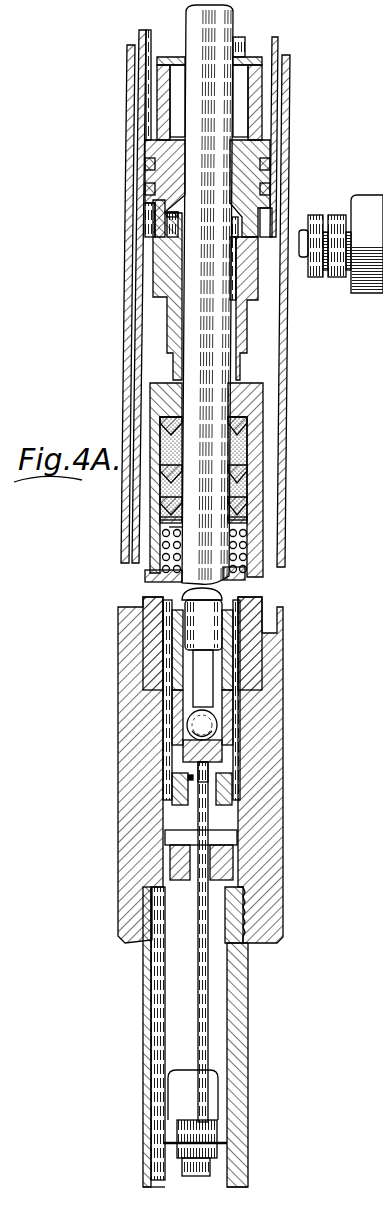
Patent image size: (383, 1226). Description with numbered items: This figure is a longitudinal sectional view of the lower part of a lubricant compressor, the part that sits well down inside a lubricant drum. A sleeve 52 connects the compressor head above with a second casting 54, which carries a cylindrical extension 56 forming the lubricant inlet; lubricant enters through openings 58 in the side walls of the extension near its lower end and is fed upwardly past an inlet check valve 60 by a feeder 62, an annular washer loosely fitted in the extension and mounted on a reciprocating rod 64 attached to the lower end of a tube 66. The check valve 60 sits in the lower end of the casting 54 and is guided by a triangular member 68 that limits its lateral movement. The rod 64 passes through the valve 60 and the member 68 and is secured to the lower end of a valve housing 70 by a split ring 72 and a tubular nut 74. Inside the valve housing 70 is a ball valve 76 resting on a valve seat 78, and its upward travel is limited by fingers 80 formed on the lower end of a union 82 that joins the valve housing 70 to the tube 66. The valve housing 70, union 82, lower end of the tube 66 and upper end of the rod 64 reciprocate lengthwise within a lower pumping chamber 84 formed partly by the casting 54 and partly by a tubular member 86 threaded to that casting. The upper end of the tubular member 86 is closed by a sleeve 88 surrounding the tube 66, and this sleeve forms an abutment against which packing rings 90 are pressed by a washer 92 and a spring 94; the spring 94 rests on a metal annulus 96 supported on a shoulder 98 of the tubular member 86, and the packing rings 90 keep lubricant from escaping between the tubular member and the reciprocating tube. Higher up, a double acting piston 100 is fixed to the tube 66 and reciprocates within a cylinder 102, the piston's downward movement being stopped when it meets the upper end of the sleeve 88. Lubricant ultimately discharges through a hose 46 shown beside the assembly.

The hose 46 is at (312, 216).
The sleeve 52 is at (285, 398).
The second casting 54 is at (280, 765).
The cylindrical extension 56 is at (248, 1008).
The openings 58 is at (214, 1096).
The inlet check valve 60 is at (240, 887).
The feeder 62 is at (220, 1138).
The reciprocating rod 64 is at (200, 1043).
The tube 66 is at (192, 440).
The triangular member 68 is at (237, 847).
The valve housing 70 is at (218, 721).
The split ring 72 is at (210, 779).
The tubular nut 74 is at (180, 820).
The ball valve 76 is at (178, 722).
The valve seat 78 is at (183, 748).
The fingers 80 is at (236, 700).
The union 82 is at (263, 628).
The lower pumping chamber 84 is at (240, 595).
The tubular member 86 is at (258, 490).
The sleeve 88 is at (247, 333).
The packing rings 90 is at (160, 462).
The washer 92 is at (245, 527).
The spring 94 is at (166, 547).
The metal annulus 96 is at (146, 577).
The shoulder 98 is at (158, 582).
The double acting piston 100 is at (250, 171).
The cylinder 102 is at (279, 123).